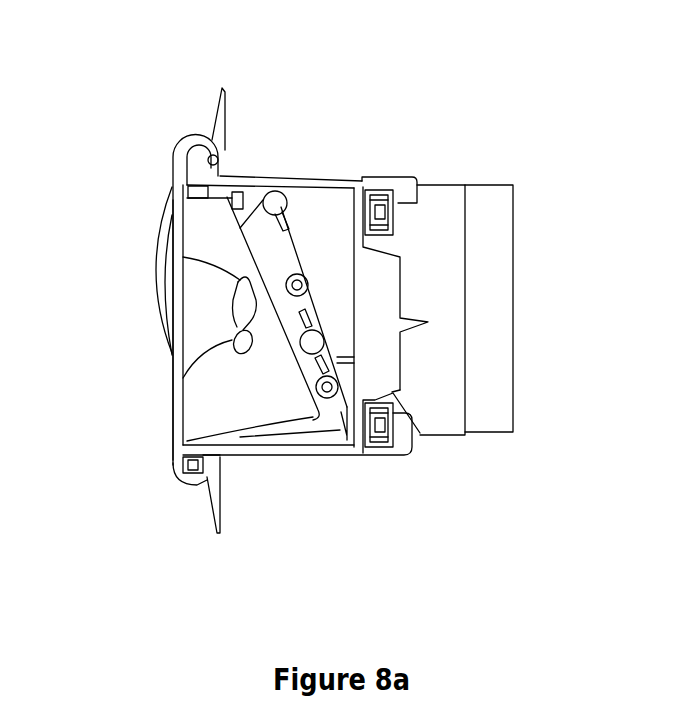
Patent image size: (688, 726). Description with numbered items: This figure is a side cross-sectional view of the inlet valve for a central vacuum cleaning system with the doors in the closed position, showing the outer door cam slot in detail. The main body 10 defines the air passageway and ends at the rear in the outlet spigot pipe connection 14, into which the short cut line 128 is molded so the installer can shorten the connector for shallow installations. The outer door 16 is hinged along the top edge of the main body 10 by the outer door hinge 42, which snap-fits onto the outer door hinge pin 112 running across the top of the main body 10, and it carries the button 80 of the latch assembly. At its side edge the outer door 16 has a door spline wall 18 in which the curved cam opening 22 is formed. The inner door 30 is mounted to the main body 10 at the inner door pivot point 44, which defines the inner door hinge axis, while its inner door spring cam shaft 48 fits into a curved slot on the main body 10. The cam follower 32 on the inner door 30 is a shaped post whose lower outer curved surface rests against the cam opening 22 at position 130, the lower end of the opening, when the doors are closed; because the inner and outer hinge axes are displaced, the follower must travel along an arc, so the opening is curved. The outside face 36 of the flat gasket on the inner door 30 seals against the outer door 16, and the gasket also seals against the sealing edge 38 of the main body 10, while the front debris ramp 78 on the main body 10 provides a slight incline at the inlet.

The main body 10 is at (323, 458).
The outlet spigot pipe connection 14 is at (513, 275).
The outer door 16 is at (172, 414).
The door spline walls 18 is at (286, 412).
The cam opening 22 is at (183, 257).
The inner door 30 is at (293, 250).
The cam follower 32 is at (185, 378).
The outside face of the flat gasket 36 is at (184, 468).
The sealing edge 38 is at (207, 478).
The outer door hinge 42 is at (187, 142).
The inner door pivot point 44 is at (276, 191).
The inner door spring cam shaft 48 is at (318, 335).
The front debris ramp 78 is at (217, 110).
The button 80 is at (157, 280).
The outer door hinge pin 112 is at (226, 140).
The short cut line 128 is at (465, 184).
The position 130 is at (250, 346).